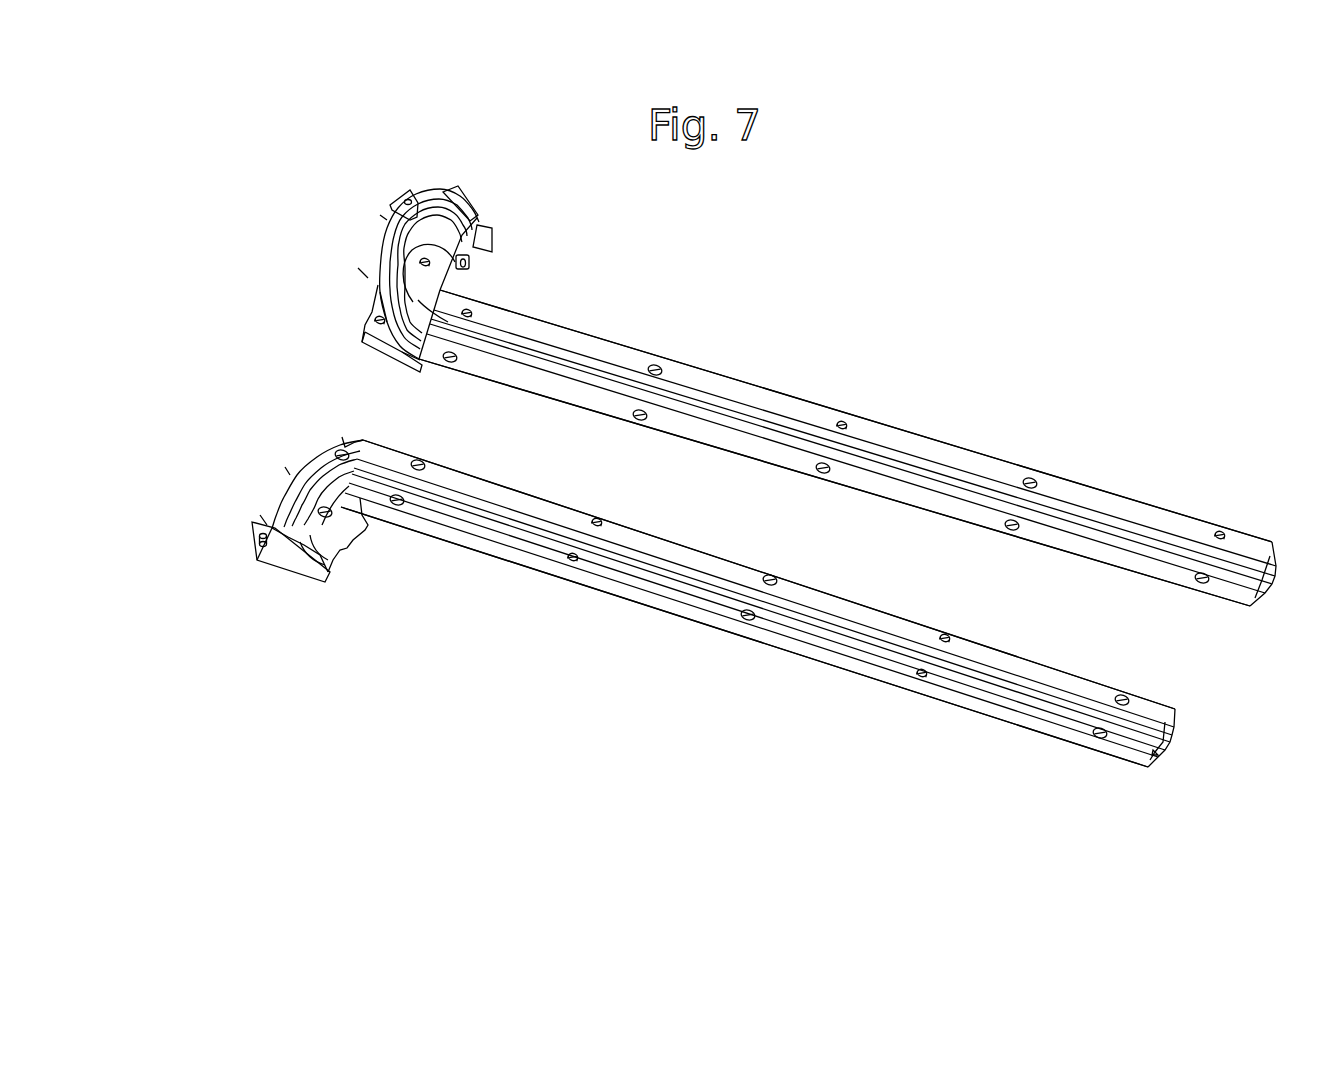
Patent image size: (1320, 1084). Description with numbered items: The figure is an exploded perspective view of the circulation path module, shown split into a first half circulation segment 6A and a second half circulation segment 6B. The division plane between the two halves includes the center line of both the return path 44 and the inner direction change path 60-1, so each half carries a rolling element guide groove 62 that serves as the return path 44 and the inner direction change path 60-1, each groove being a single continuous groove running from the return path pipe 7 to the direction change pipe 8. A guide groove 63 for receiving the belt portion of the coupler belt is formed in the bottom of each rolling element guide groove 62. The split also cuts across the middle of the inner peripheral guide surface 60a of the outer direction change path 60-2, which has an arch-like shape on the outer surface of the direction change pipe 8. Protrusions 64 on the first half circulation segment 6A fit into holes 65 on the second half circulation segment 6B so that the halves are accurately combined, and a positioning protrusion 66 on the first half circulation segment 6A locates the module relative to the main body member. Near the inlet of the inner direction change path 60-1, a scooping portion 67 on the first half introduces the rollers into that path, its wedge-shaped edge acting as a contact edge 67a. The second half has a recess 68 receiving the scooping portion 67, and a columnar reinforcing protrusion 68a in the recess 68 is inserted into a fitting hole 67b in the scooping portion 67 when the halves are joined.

The first half circulation segment 6A is at (762, 391).
The second half circulation segment 6B is at (658, 612).
The return path pipe 7 is at (808, 526).
The direction change pipe 8 is at (370, 304).
The return path 44 is at (899, 452).
The inner direction change path 60-1 is at (344, 378).
The inner peripheral guide surface 60a is at (380, 247).
The outer direction change path 60-2 is at (273, 392).
The rolling element guide groove 62 is at (583, 372).
The guide groove 63 is at (400, 293).
The protrusion 64 is at (472, 308).
The hole 65 is at (659, 364).
The positioning protrusion 66 is at (472, 265).
The scooping portion 67 is at (437, 190).
The contact edge 67a is at (460, 203).
The fitting hole 67b is at (405, 195).
The recess 68 is at (293, 563).
The reinforcing protrusion 68a is at (262, 541).